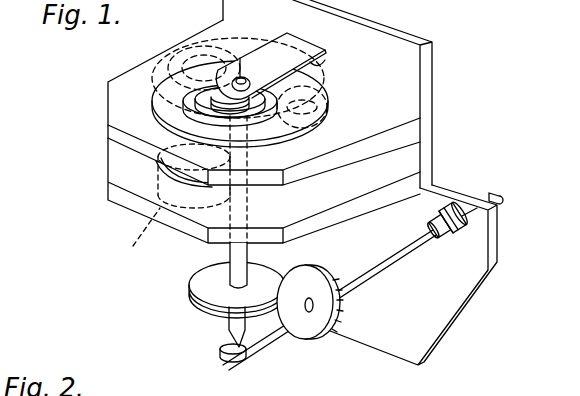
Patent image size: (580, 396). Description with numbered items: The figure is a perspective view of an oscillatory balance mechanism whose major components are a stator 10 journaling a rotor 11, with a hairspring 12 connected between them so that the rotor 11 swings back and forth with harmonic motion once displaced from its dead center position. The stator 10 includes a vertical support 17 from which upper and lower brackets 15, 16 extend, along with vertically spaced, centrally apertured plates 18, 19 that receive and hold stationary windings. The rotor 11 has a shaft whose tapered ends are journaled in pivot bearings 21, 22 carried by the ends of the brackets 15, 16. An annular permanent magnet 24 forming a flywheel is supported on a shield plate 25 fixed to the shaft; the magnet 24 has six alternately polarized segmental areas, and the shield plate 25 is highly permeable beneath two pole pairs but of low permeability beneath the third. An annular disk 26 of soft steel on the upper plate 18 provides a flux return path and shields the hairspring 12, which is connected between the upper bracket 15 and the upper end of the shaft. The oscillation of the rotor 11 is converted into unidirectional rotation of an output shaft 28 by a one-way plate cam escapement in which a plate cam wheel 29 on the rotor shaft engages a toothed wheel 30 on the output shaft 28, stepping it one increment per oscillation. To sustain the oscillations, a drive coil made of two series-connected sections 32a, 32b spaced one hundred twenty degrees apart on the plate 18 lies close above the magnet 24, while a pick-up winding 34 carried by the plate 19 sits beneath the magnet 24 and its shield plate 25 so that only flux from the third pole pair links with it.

The stator 10 is at (125, 213).
The rotor 11 is at (142, 125).
The hairspring 12 is at (154, 94).
The upper bracket 15 is at (326, 58).
The lower bracket 16 is at (261, 337).
The back panel 17 is at (345, 26).
The upper plate 18 is at (363, 136).
The lower plate 19 is at (357, 194).
The upper pivot bearing 21 is at (244, 70).
The lower pivot bearing 22 is at (238, 363).
The annular permanent magnet 24 is at (158, 161).
The shield plate 25 is at (258, 190).
The annular disk 26 is at (323, 80).
The output shaft 28 is at (492, 193).
The plate cam wheel 29 is at (260, 273).
The toothed wheel 30 is at (320, 330).
The drive winding section 32a is at (357, 98).
The drive winding section 32b is at (181, 42).
The pick-up winding 34 is at (137, 233).